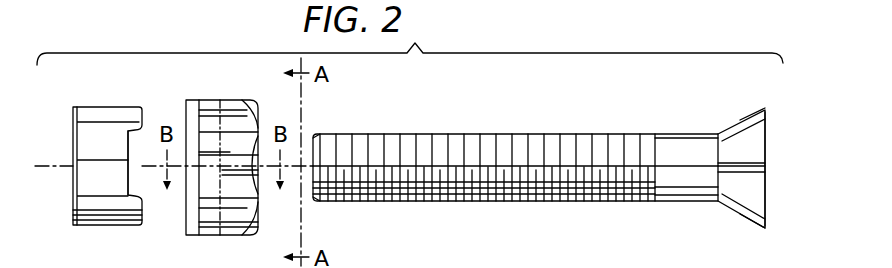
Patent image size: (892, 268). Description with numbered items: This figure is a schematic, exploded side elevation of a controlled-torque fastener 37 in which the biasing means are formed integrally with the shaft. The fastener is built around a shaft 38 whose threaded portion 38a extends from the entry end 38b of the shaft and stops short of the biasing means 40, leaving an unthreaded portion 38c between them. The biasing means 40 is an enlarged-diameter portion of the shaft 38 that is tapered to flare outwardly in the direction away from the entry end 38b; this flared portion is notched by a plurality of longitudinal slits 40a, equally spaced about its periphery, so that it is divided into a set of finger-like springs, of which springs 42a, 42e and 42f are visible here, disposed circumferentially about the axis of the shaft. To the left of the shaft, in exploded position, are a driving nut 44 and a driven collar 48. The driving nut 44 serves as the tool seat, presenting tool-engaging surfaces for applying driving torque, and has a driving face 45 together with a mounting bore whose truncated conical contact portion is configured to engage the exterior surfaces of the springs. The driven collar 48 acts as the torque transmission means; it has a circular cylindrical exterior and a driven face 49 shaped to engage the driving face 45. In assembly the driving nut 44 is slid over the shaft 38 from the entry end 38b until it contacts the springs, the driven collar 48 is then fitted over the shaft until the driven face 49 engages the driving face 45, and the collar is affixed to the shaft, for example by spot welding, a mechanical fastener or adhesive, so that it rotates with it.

The controlled-torque fastener 37 is at (416, 43).
The shaft 38 is at (563, 162).
The threaded portion 38a is at (383, 152).
The entry end 38b is at (310, 188).
The unthreaded portion 38c is at (673, 188).
The biasing means 40 is at (748, 160).
The longitudinal slits 40a is at (731, 212).
The finger-like spring 42a is at (792, 98).
The finger-like spring 42e is at (811, 214).
The finger-like spring 42f is at (808, 150).
The driving nut 44 is at (213, 165).
The driving face 45 is at (180, 203).
The driven collar 48 is at (116, 166).
The driven face 49 is at (142, 186).